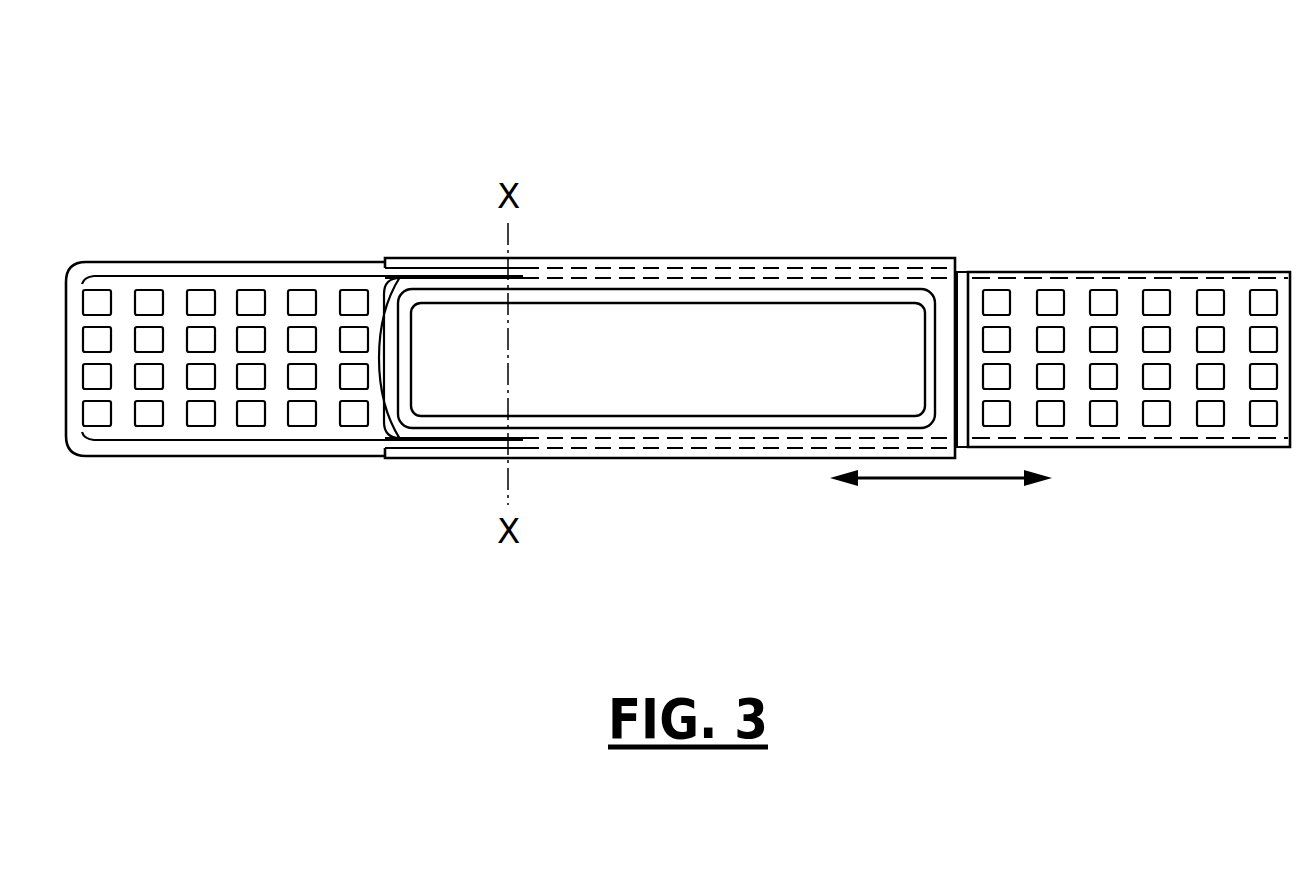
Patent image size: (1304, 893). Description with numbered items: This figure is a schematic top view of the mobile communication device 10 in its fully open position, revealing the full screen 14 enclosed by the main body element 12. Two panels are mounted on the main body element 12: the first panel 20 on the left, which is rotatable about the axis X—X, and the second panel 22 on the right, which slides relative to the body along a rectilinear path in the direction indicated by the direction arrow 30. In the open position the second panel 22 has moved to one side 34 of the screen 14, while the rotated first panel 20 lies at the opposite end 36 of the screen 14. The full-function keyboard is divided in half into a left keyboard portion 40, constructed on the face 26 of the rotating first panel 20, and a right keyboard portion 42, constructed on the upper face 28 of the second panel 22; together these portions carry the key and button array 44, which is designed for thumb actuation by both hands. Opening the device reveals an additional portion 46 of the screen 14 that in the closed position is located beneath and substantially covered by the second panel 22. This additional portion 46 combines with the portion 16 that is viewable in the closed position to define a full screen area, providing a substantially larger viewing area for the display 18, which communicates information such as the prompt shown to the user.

The mobile communication device 10 is at (941, 127).
The main body element 12 is at (764, 241).
The screen 14 is at (659, 288).
The viewable screen portion 16 is at (457, 405).
The display 18 is at (683, 397).
The first panel 20 is at (115, 262).
The second panel 22 is at (1215, 270).
The inner face of first panel 26 is at (281, 290).
The face of second panel 28 is at (1075, 295).
The direction arrow 30 is at (962, 482).
The screen side 34 is at (908, 321).
The screen end 36 is at (436, 325).
The left keyboard portion 40 is at (209, 258).
The right keyboard portion 42 is at (1142, 265).
The key and button array 44 is at (436, 123).
The additional screen portion 46 is at (804, 386).